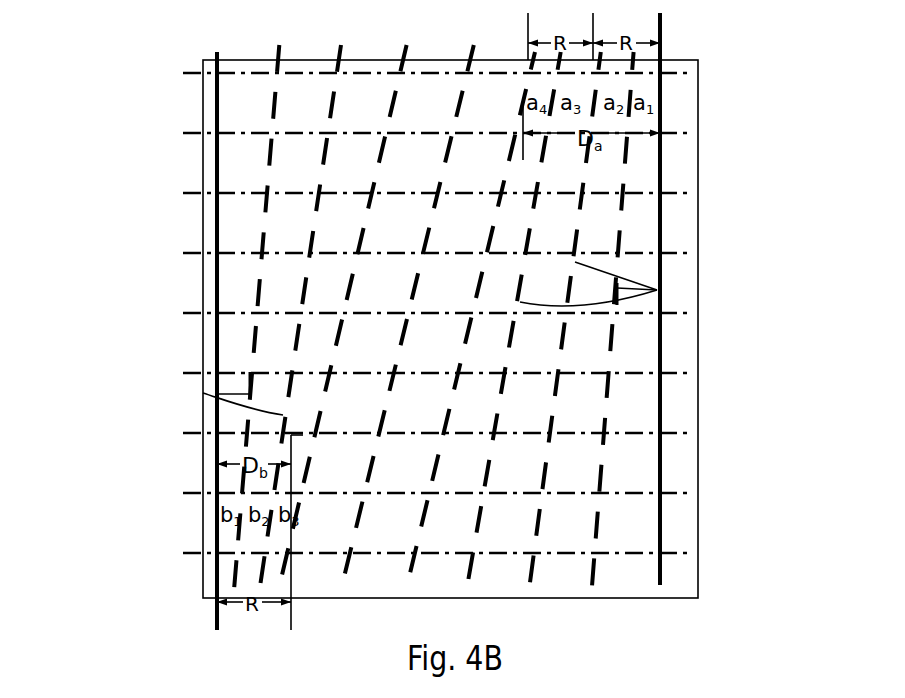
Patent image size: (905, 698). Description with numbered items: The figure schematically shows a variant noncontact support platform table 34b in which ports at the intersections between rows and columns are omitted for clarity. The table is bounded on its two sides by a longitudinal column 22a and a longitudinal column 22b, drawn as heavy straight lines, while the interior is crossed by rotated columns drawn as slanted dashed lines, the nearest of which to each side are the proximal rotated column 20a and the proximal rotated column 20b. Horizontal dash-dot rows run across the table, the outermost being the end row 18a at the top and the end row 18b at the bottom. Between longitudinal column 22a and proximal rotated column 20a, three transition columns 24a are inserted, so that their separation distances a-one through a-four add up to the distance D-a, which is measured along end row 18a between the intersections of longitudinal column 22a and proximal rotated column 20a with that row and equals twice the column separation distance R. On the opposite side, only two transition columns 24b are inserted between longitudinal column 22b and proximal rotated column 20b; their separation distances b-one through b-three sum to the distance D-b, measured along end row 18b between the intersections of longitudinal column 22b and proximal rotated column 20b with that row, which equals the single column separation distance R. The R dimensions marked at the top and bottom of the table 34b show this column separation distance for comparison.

The end row 18a is at (192, 77).
The end row 18b is at (190, 551).
The proximal rotated column 20a is at (455, 393).
The proximal rotated column 20b is at (373, 166).
The longitudinal column 22a is at (655, 160).
The longitudinal column 22b is at (215, 290).
The transition columns 24a is at (658, 290).
The transition columns 24b is at (215, 394).
The noncontact support platform table 34b is at (698, 481).